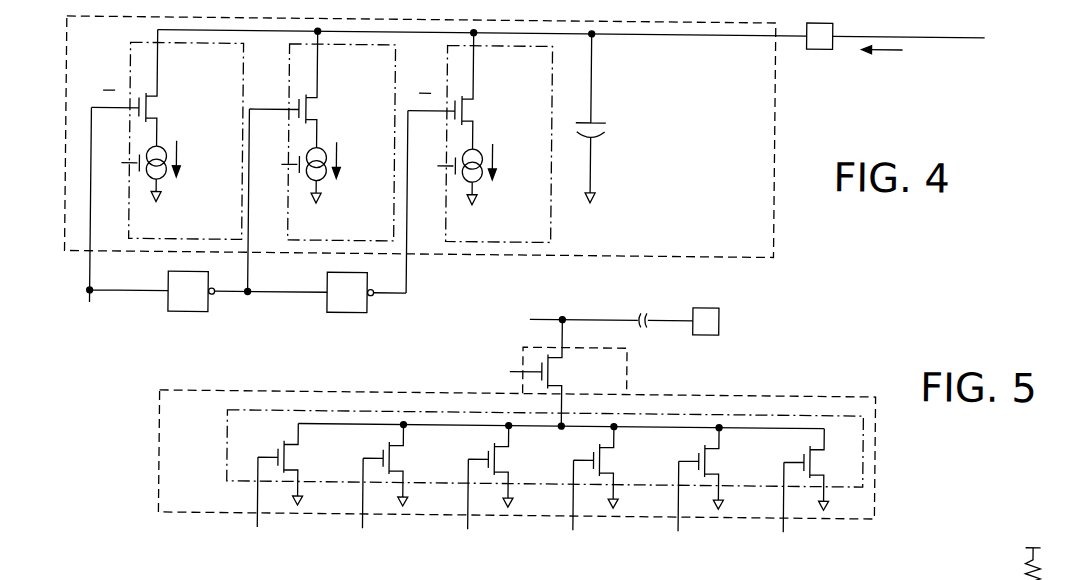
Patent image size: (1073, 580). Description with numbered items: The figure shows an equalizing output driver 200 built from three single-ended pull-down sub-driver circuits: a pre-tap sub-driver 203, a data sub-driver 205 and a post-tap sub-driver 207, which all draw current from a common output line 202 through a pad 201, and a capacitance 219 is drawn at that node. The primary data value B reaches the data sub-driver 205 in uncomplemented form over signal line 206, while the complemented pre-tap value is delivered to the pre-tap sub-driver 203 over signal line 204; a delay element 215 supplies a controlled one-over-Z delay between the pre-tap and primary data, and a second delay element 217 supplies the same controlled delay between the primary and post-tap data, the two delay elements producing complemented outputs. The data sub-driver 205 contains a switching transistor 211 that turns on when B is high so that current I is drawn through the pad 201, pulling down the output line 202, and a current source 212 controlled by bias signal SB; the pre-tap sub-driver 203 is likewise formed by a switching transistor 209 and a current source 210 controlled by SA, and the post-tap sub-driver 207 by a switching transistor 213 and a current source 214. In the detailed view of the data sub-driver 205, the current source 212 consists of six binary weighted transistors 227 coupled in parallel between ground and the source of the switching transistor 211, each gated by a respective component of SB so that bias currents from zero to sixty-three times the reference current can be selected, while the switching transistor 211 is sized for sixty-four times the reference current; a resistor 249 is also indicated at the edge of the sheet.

In FIG. 4, the equalizing output driver 200 is at (767, 232).
In FIG. 4, the pad 201 is at (820, 41).
In FIG. 5, the pad 201 is at (710, 328).
In FIG. 4, the output line 202 is at (960, 29).
In FIG. 4, the pre-tap sub-driver 203 is at (173, 232).
In FIG. 4, the signal line 204 is at (251, 278).
In FIG. 4, the data sub-driver 205 is at (333, 232).
In FIG. 5, the data sub-driver 205 is at (826, 387).
In FIG. 4, the signal line 206 is at (410, 276).
In FIG. 4, the post-tap sub-driver 207 is at (489, 232).
In FIG. 4, the switching transistor 209 is at (158, 106).
In FIG. 4, the current source 210 is at (163, 176).
In FIG. 4, the switching transistor 211 is at (318, 106).
In FIG. 5, the switching transistor 211 is at (569, 380).
In FIG. 4, the current source 212 is at (323, 176).
In FIG. 5, the current source 212 is at (232, 450).
In FIG. 4, the switching transistor 213 is at (474, 106).
In FIG. 4, the current source 214 is at (479, 176).
In FIG. 4, the delay element 215 is at (191, 310).
In FIG. 4, the delay element 217 is at (349, 309).
In FIG. 4, the capacitance 219 is at (597, 141).
In FIG. 5, the binary weighted transistors 227 is at (828, 440).
In FIG. 5, the bias resistor 249 is at (196, 578).